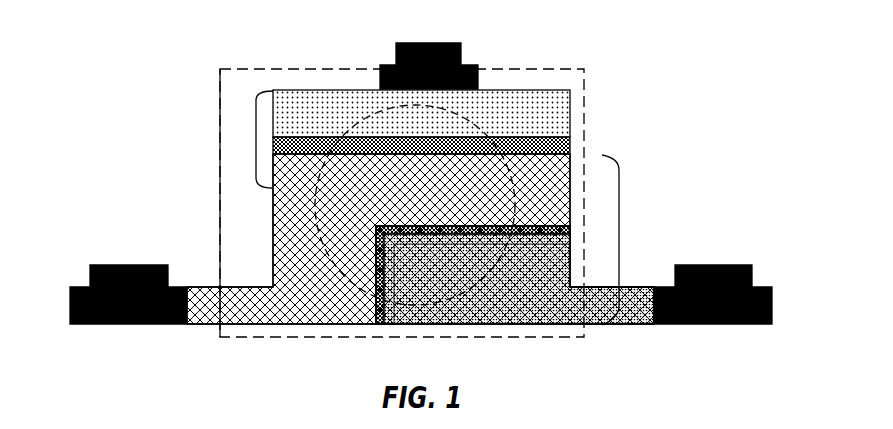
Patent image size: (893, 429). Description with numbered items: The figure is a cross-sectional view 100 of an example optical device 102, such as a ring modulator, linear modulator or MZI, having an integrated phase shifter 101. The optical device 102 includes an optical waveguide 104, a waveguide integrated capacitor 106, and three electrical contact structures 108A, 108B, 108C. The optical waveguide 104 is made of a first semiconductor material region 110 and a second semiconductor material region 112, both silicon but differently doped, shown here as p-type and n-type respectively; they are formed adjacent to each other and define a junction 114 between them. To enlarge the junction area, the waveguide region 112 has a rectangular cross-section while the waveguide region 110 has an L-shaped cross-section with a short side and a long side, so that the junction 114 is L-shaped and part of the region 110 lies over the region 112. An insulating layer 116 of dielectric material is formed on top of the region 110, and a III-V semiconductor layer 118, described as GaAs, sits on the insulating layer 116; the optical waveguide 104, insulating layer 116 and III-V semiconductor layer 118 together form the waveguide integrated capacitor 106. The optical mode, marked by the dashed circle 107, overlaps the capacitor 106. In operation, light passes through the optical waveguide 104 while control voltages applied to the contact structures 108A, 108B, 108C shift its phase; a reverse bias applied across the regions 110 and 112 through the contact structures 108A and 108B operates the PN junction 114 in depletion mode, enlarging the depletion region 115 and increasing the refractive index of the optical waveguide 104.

The cross-sectional view 100 is at (92, 52).
The phase shifter 101 is at (218, 175).
The optical device 102 is at (606, 66).
The optical waveguide 104 is at (622, 240).
The waveguide integrated capacitor 106 is at (255, 139).
The optical mode 107 is at (375, 100).
The electrical contact structure 108A is at (128, 265).
The electrical contact structure 108B is at (710, 265).
The electrical contact structure 108C is at (432, 42).
The first semiconductor material region 110 is at (327, 291).
The second semiconductor material region 112 is at (544, 290).
The junction 114 is at (395, 228).
The depletion region 115 is at (492, 228).
The insulating layer 116 is at (570, 147).
The III-V semiconductor layer 118 is at (497, 89).